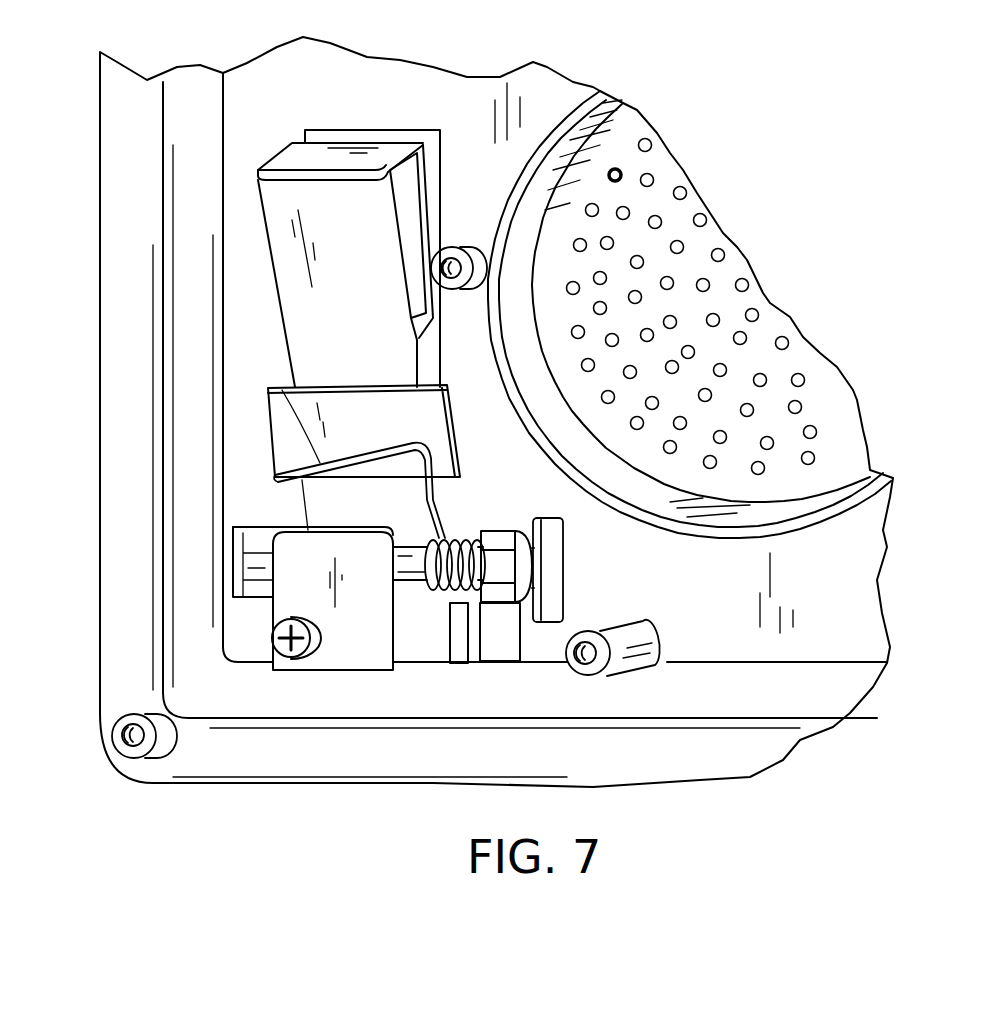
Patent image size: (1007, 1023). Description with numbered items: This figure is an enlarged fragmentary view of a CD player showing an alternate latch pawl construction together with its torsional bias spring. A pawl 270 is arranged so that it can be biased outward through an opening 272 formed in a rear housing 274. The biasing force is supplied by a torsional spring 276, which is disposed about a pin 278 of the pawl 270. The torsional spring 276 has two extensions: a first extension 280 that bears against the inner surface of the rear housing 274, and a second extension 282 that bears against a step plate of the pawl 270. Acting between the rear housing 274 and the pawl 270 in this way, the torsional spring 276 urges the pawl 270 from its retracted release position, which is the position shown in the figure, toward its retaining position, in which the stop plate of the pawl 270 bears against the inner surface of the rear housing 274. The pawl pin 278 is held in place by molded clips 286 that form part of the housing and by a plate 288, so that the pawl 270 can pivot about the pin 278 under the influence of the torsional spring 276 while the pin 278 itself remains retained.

The pawl 270 is at (287, 210).
The opening 272 is at (367, 128).
The rear housing 274 is at (470, 97).
The torsional spring 276 is at (433, 497).
The pin 278 is at (407, 580).
The first extension 280 is at (473, 607).
The second extension 282 is at (282, 385).
The molded clips 286 is at (503, 530).
The plate 288 is at (348, 672).